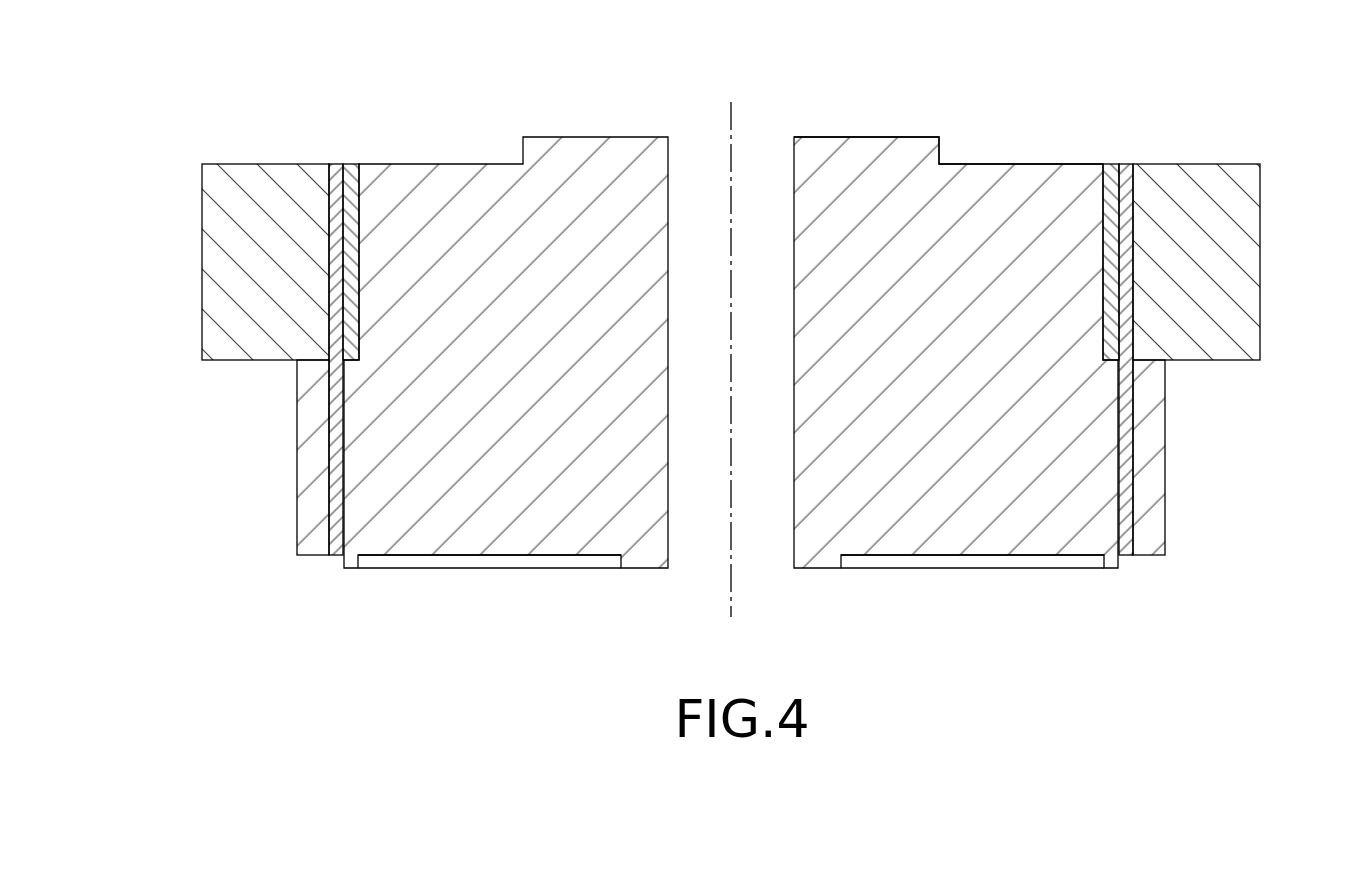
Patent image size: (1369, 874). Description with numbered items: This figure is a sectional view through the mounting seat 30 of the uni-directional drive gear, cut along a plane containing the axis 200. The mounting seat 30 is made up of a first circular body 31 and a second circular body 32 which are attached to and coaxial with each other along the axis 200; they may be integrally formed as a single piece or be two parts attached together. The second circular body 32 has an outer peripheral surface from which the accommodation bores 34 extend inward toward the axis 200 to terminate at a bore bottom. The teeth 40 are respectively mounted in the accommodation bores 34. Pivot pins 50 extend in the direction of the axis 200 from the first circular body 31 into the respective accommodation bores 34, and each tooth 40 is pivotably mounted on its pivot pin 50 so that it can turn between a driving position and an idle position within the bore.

The axis 200 is at (731, 122).
The mounting seat 30 is at (970, 165).
The first circular body 31 is at (937, 520).
The second circular body 32 is at (1030, 175).
The accommodation bore 34 is at (358, 270).
The tooth 40 is at (223, 185).
The pivot pin 50 is at (333, 218).